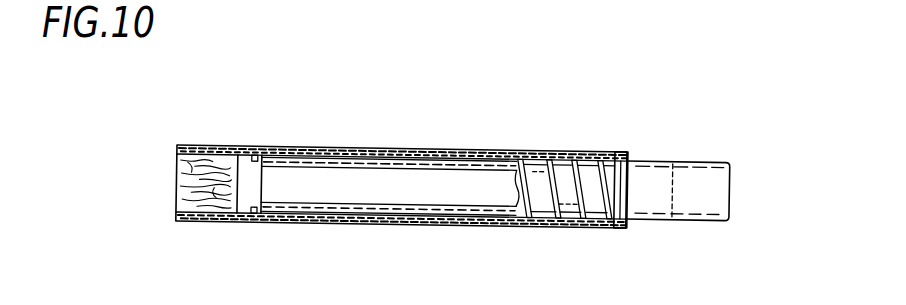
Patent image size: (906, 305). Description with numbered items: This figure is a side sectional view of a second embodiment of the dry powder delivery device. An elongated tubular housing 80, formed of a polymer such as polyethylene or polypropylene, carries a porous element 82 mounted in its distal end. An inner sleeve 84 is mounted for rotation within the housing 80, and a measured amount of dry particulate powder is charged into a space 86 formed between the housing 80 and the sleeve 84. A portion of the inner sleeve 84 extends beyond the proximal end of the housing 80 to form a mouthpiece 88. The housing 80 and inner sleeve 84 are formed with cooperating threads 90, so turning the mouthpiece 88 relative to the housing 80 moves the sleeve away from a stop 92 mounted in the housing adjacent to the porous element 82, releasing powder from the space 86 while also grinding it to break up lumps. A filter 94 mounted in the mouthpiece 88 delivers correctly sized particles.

The elongated tubular housing 80 is at (556, 148).
The porous element 82 is at (210, 145).
The inner sleeve 84 is at (383, 147).
The space 86 is at (295, 147).
The mouthpiece 88 is at (715, 162).
The cooperating threads 90 is at (570, 208).
The stop 92 is at (252, 223).
The filter 94 is at (673, 162).